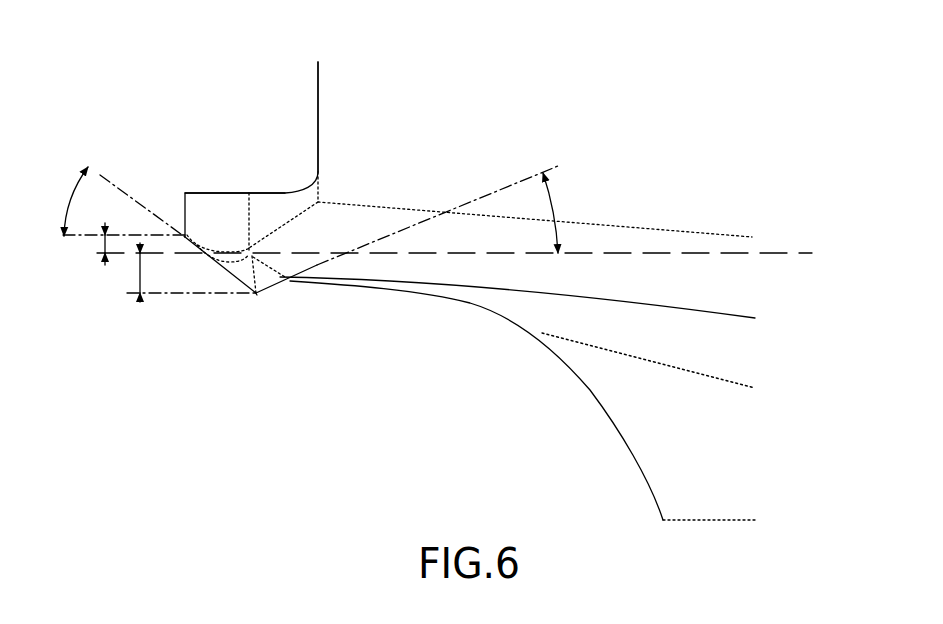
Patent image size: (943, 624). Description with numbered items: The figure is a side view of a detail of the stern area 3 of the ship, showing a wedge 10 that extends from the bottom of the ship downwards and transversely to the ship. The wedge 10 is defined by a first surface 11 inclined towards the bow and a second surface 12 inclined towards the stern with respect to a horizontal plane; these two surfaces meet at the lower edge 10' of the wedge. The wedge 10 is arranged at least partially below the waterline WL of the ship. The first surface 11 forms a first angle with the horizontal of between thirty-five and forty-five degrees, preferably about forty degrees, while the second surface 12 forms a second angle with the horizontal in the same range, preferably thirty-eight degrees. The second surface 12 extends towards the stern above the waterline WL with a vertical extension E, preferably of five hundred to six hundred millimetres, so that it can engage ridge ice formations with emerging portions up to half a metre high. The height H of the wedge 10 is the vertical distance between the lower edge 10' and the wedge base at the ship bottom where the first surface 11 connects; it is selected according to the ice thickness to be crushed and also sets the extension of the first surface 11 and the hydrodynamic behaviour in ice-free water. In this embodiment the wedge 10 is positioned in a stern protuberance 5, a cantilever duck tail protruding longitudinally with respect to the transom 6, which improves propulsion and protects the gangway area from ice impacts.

The stern area 3 is at (277, 133).
The stern protuberance 5 is at (210, 187).
The transom 6 is at (317, 97).
The wedge 10 is at (382, 317).
The lower edge 10' is at (298, 360).
The first surface 11 is at (283, 285).
The second surface 12 is at (247, 260).
The waterline WL is at (805, 252).
The vertical extension E is at (105, 243).
The height H is at (140, 275).